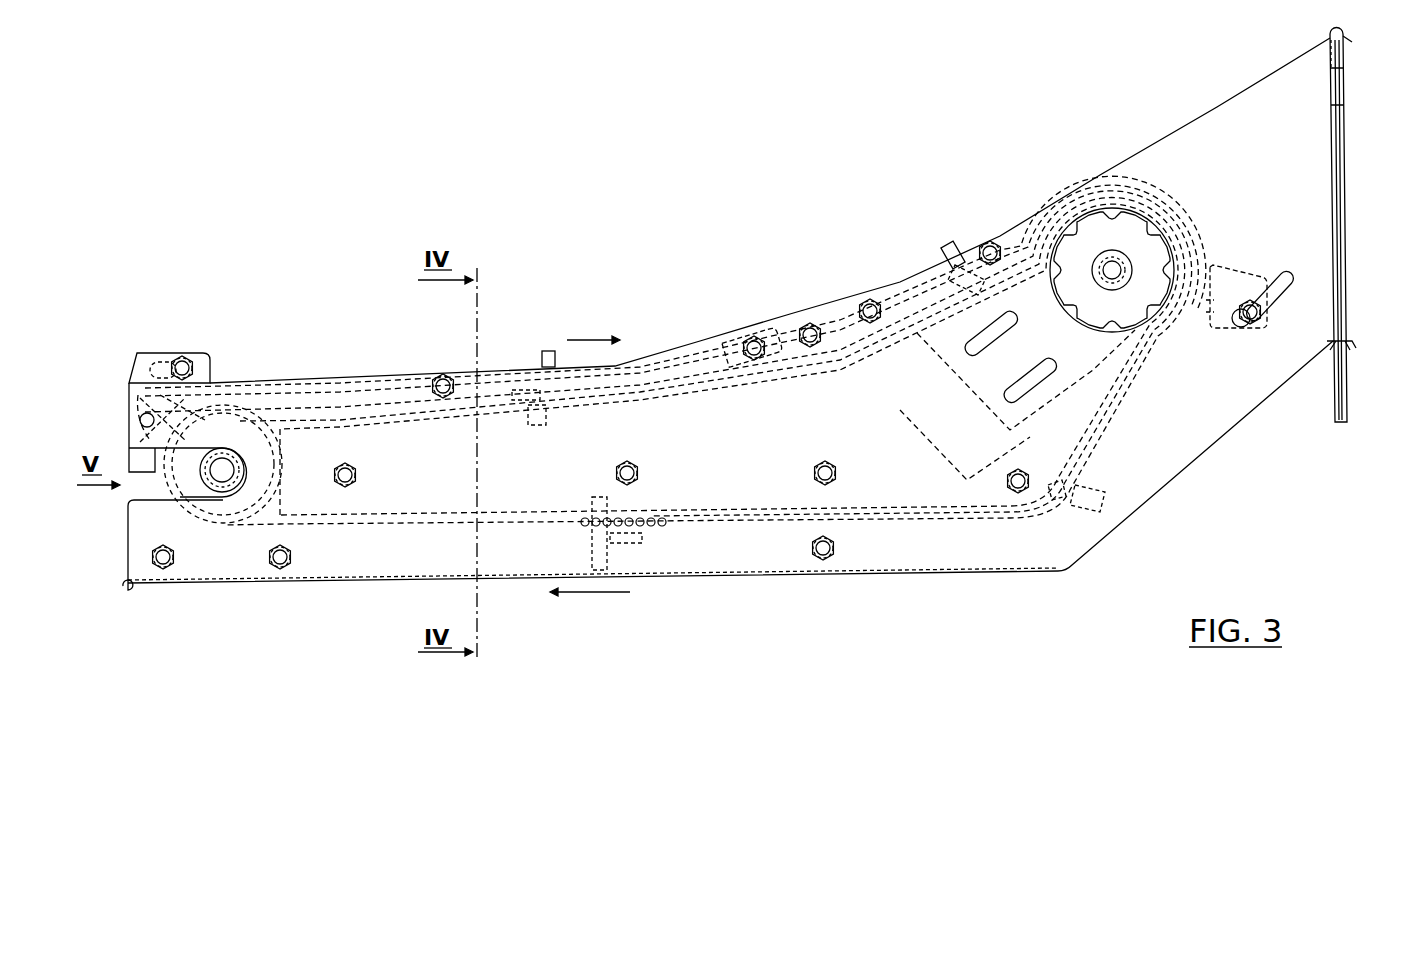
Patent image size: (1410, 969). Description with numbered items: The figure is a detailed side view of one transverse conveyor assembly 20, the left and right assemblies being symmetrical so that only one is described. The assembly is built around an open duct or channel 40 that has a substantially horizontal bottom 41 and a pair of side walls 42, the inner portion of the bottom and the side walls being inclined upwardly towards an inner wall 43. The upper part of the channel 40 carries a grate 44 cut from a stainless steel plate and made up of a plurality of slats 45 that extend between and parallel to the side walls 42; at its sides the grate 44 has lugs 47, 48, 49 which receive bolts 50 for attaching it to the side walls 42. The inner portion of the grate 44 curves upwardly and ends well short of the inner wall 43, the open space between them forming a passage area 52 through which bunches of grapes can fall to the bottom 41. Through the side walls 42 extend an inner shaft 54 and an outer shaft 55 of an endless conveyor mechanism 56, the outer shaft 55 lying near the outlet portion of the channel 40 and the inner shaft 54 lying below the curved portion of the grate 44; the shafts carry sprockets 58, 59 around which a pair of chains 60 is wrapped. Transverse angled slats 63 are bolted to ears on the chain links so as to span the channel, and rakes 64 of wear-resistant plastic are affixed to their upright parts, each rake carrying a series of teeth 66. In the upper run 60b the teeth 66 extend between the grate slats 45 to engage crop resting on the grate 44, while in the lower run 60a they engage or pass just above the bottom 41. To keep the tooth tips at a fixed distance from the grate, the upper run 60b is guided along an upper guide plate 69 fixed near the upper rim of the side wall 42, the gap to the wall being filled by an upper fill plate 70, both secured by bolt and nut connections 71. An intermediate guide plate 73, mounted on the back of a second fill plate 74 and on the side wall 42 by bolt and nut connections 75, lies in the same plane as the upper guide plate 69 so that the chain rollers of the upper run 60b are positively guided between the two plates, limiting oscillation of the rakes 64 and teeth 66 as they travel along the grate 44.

The conveyor assembly 20 is at (681, 186).
The channel 40 is at (885, 550).
The channel bottom 41 is at (737, 575).
The side walls 42 is at (1193, 430).
The inner wall 43 is at (1345, 185).
The grate 44 is at (1090, 192).
The slats 45 is at (292, 388).
The lug 47 is at (205, 362).
The lug 48 is at (688, 338).
The lug 49 is at (1247, 278).
The bolts 50 is at (182, 356).
The passage area 52 is at (1292, 250).
The inner shaft 54 is at (1105, 265).
The outer shaft 55 is at (224, 482).
The endless conveyor mechanism 56 is at (1133, 444).
The sprocket 58 is at (1105, 228).
The sprocket 59 is at (187, 520).
The chains 60 is at (317, 527).
The lower chain run 60a is at (507, 530).
The upper chain run 60b is at (345, 412).
The angled slats 63 is at (517, 397).
The rakes 64 is at (553, 422).
The teeth 66 is at (548, 351).
The upper guide plate 69 is at (157, 450).
The upper fill plate 70 is at (153, 455).
The bolt and nut connections 71 is at (443, 378).
The intermediate guide plate 73 is at (350, 524).
The second fill plate 74 is at (385, 524).
The bolt and nut connections 75 is at (358, 470).